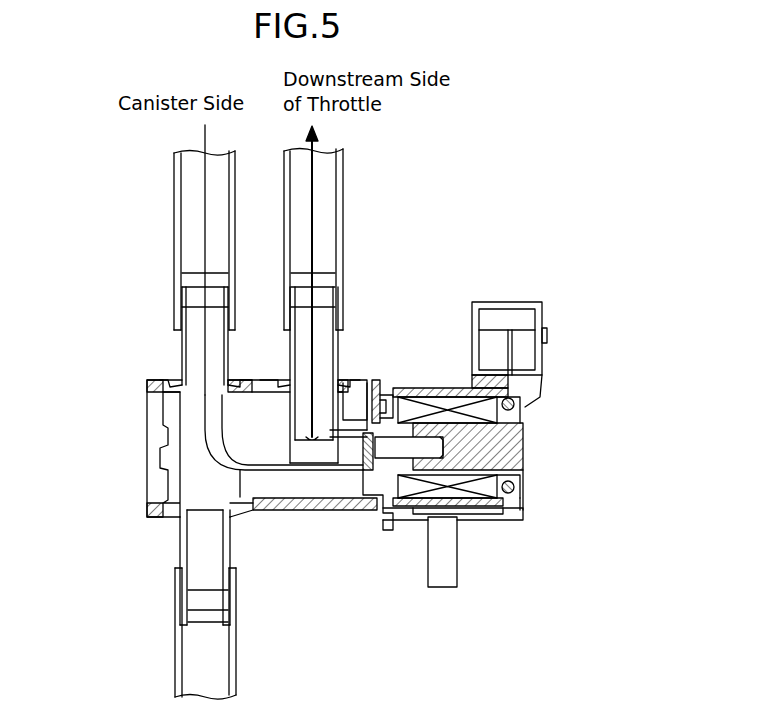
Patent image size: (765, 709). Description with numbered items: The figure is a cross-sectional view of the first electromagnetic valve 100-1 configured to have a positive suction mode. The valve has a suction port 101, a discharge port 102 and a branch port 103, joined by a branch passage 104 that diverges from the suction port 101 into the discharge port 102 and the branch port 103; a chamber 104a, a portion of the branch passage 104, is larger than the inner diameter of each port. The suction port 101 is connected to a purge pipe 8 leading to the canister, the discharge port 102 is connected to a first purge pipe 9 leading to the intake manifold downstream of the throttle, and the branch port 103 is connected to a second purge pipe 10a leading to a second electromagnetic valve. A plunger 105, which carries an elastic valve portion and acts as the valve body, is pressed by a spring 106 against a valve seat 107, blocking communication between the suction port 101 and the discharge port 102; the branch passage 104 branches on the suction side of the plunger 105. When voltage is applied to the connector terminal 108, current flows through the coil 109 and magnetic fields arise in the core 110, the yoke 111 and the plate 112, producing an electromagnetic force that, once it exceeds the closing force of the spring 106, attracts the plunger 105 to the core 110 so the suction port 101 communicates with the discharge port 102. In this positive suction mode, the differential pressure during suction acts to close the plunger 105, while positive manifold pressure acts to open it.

The purge pipe 8 is at (174, 222).
The first purge pipe 9 is at (343, 218).
The first electromagnetic valve 100-1 is at (506, 225).
The suction port 101 is at (182, 350).
The discharge port 102 is at (343, 322).
The branch port 103 is at (180, 548).
The branch passage 104 is at (140, 475).
The chamber 104a is at (190, 433).
The plunger 105 is at (362, 485).
The spring 106 is at (403, 520).
The valve seat 107 is at (310, 472).
The connector terminal 108 is at (540, 352).
The coil 109 is at (520, 402).
The core 110 is at (520, 447).
The yoke 111 is at (505, 515).
The plate 112 is at (378, 383).
The second purge pipe 10a is at (176, 658).